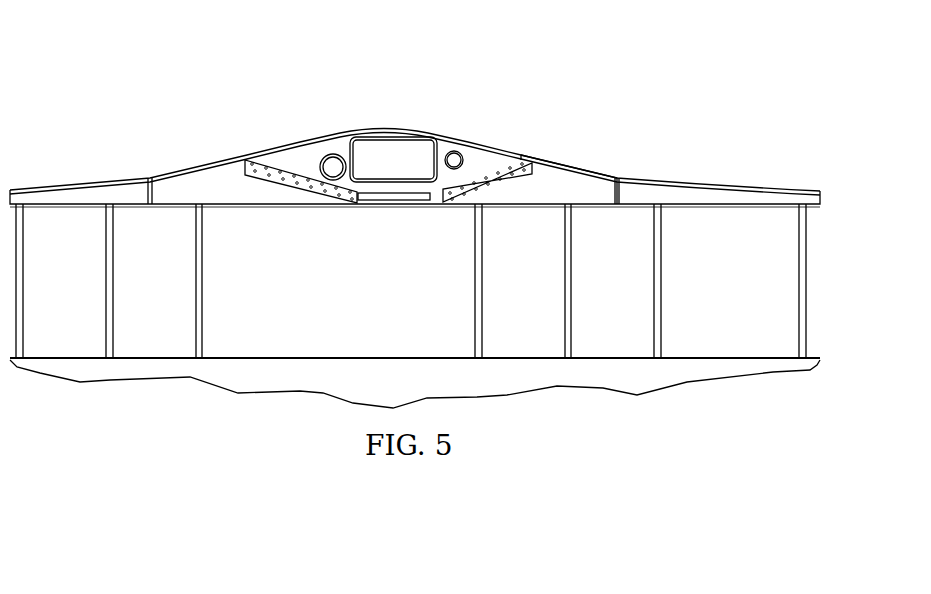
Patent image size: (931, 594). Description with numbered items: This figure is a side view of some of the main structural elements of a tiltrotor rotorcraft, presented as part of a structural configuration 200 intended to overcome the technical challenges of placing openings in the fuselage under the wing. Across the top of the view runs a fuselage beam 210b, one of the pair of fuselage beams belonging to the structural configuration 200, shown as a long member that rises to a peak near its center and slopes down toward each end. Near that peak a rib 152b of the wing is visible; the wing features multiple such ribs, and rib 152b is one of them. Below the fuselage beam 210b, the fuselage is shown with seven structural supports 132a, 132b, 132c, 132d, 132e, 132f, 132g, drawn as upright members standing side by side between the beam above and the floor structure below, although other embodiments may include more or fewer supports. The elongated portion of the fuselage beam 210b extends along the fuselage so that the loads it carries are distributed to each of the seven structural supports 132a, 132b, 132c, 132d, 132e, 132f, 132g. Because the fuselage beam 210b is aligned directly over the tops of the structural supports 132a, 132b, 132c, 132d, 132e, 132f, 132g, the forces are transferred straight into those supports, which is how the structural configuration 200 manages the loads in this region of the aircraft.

The structural configuration 200 is at (230, 88).
The rib 152b is at (395, 147).
The fuselage beam 210b is at (591, 172).
The structural support 132a is at (23, 251).
The structural support 132b is at (113, 313).
The structural support 132c is at (202, 251).
The structural support 132d is at (482, 251).
The structural support 132e is at (571, 313).
The structural support 132f is at (661, 251).
The structural support 132g is at (799, 313).